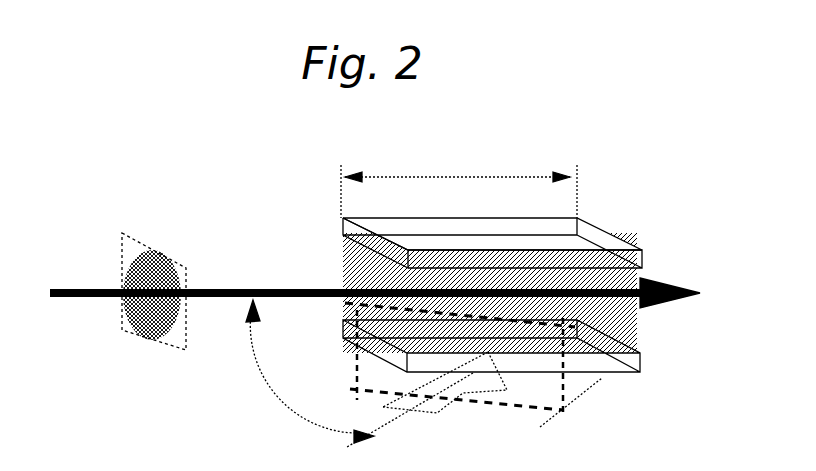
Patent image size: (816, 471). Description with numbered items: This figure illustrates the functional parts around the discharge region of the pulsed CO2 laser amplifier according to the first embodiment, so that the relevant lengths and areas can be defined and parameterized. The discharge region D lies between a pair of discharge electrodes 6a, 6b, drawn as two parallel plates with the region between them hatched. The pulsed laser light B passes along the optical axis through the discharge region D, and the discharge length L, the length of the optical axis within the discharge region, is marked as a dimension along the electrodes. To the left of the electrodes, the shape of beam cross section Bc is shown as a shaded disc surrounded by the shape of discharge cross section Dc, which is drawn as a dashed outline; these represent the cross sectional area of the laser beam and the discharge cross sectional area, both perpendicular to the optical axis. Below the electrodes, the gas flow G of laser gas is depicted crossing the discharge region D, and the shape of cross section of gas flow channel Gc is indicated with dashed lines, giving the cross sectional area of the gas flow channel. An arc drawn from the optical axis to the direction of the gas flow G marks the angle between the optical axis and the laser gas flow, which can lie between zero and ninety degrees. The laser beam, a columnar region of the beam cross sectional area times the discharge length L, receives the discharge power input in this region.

The discharge electrode 6a is at (340, 222).
The discharge electrode 6b is at (643, 358).
The pulsed laser light B is at (672, 284).
The shape of beam cross section Bc is at (151, 252).
The discharge region D is at (508, 272).
The shape of discharge cross section Dc is at (186, 275).
The discharge length L is at (459, 181).
The gas flow G is at (427, 399).
The shape of cross section of gas flow channel Gc is at (602, 378).